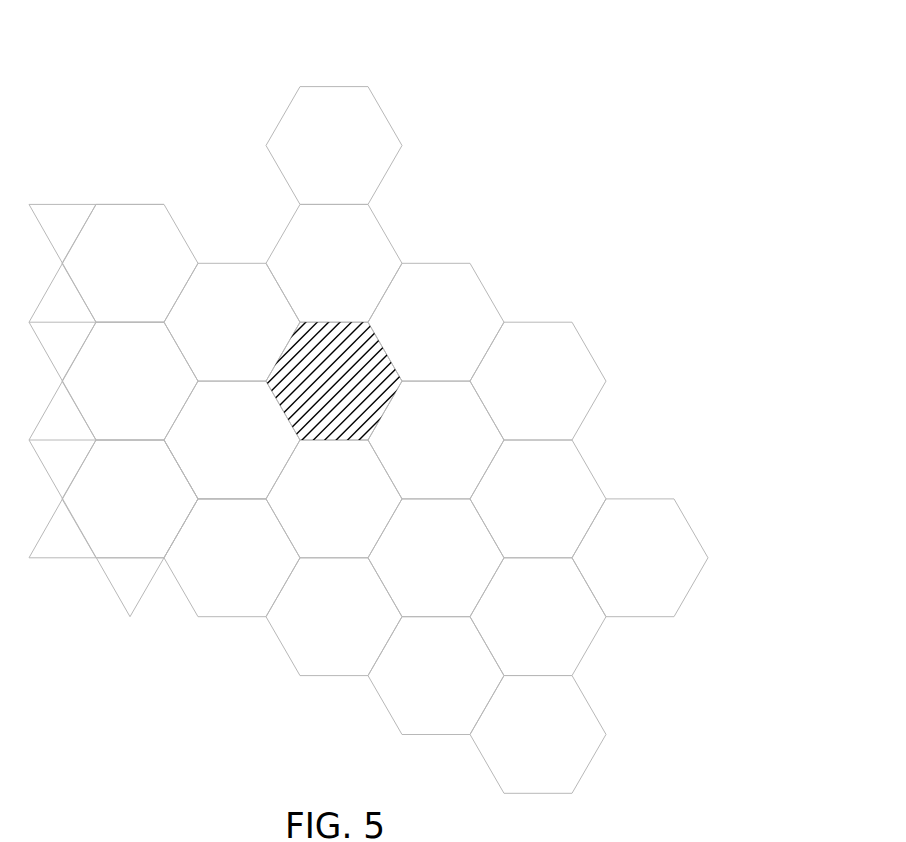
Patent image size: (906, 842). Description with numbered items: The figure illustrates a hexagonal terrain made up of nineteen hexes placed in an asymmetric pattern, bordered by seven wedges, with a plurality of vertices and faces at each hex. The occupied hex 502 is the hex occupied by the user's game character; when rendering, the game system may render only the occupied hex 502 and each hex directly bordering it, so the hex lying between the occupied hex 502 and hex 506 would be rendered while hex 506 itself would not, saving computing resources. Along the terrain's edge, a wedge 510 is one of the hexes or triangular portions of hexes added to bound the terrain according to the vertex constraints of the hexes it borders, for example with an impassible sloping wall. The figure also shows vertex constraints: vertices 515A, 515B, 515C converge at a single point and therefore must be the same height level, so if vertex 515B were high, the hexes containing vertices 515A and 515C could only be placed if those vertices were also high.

The occupied hex 502 is at (333, 382).
The hex 506 is at (362, 113).
The wedge 510 is at (53, 220).
The vertex 515A is at (193, 500).
The vertex 515B is at (197, 497).
The vertex 515C is at (200, 503).